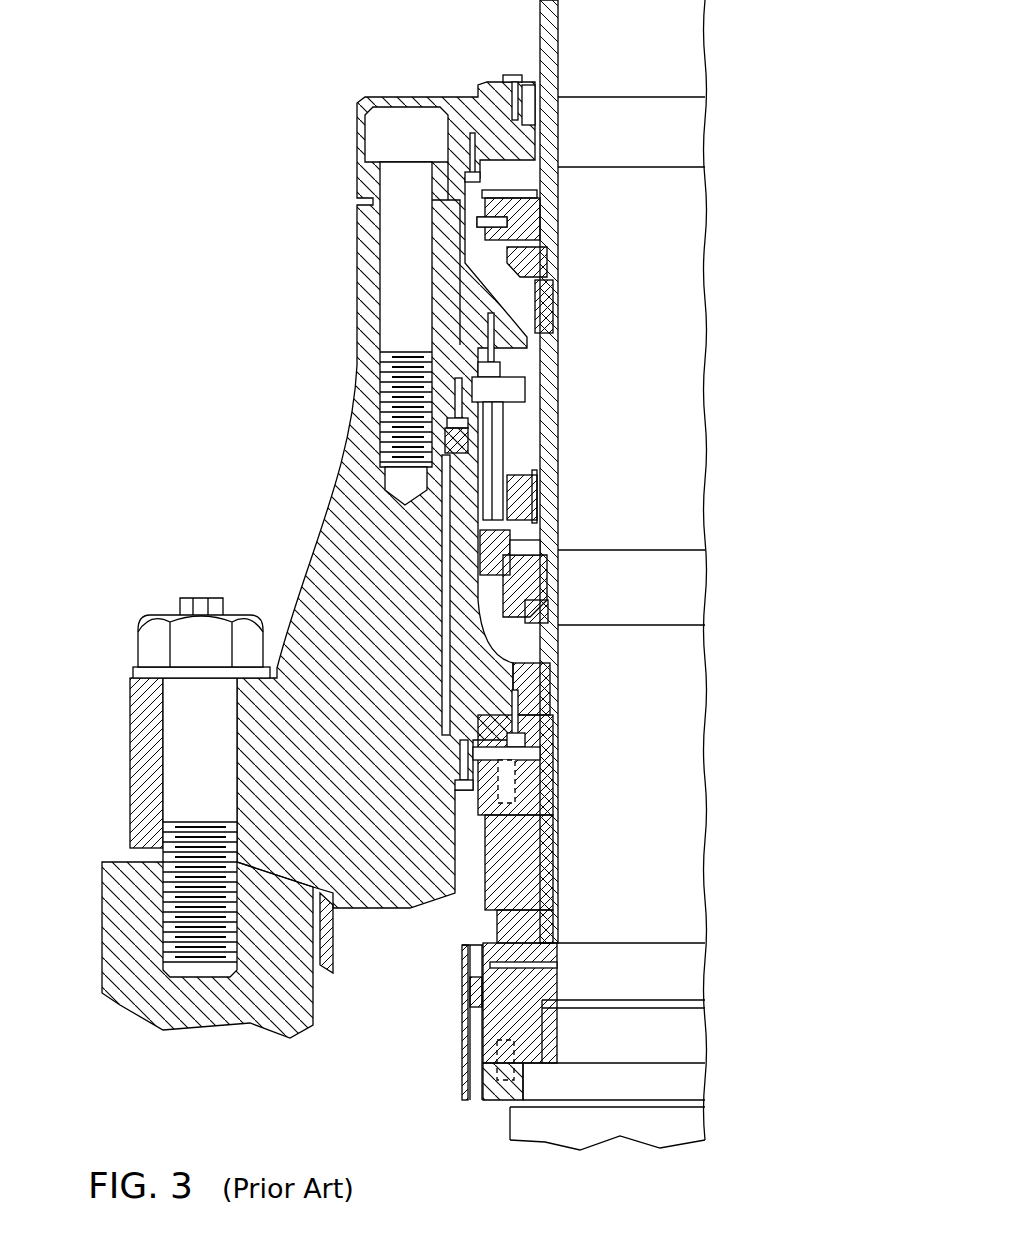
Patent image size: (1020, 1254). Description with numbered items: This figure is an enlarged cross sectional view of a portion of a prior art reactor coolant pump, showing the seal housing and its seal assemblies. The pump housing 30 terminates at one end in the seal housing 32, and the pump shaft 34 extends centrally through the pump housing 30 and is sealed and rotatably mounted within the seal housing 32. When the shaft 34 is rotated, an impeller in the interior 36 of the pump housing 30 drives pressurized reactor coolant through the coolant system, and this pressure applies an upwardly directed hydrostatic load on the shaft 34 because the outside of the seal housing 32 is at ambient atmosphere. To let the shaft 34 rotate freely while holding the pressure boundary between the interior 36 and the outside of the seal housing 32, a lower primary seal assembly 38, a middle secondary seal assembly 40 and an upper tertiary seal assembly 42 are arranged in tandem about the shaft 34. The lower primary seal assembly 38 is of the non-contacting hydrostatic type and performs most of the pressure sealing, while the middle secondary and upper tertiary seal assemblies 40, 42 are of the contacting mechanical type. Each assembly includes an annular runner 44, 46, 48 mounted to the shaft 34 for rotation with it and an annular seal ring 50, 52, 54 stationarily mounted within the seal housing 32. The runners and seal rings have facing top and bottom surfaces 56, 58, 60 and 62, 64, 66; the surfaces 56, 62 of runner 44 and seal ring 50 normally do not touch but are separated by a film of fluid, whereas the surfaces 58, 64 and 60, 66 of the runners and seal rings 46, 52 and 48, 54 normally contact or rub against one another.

The pump housing 30 is at (170, 1008).
The seal housing 32 is at (312, 588).
The pump shaft 34 is at (688, 49).
The interior 36 is at (405, 1016).
The lower primary seal assembly 38 is at (554, 881).
The middle secondary seal assembly 40 is at (467, 500).
The upper tertiary seal assembly 42 is at (478, 226).
The annular runner 44 is at (543, 929).
The annular runner 46 is at (537, 578).
The annular runner 48 is at (540, 277).
The annular seal ring 50 is at (545, 842).
The annular seal ring 52 is at (527, 496).
The annular seal ring 54 is at (536, 220).
The top surface 56 is at (540, 908).
The top surface 58 is at (545, 515).
The top surface 60 is at (545, 248).
The bottom surface 62 is at (525, 910).
The bottom surface 64 is at (527, 497).
The bottom surface 66 is at (512, 252).